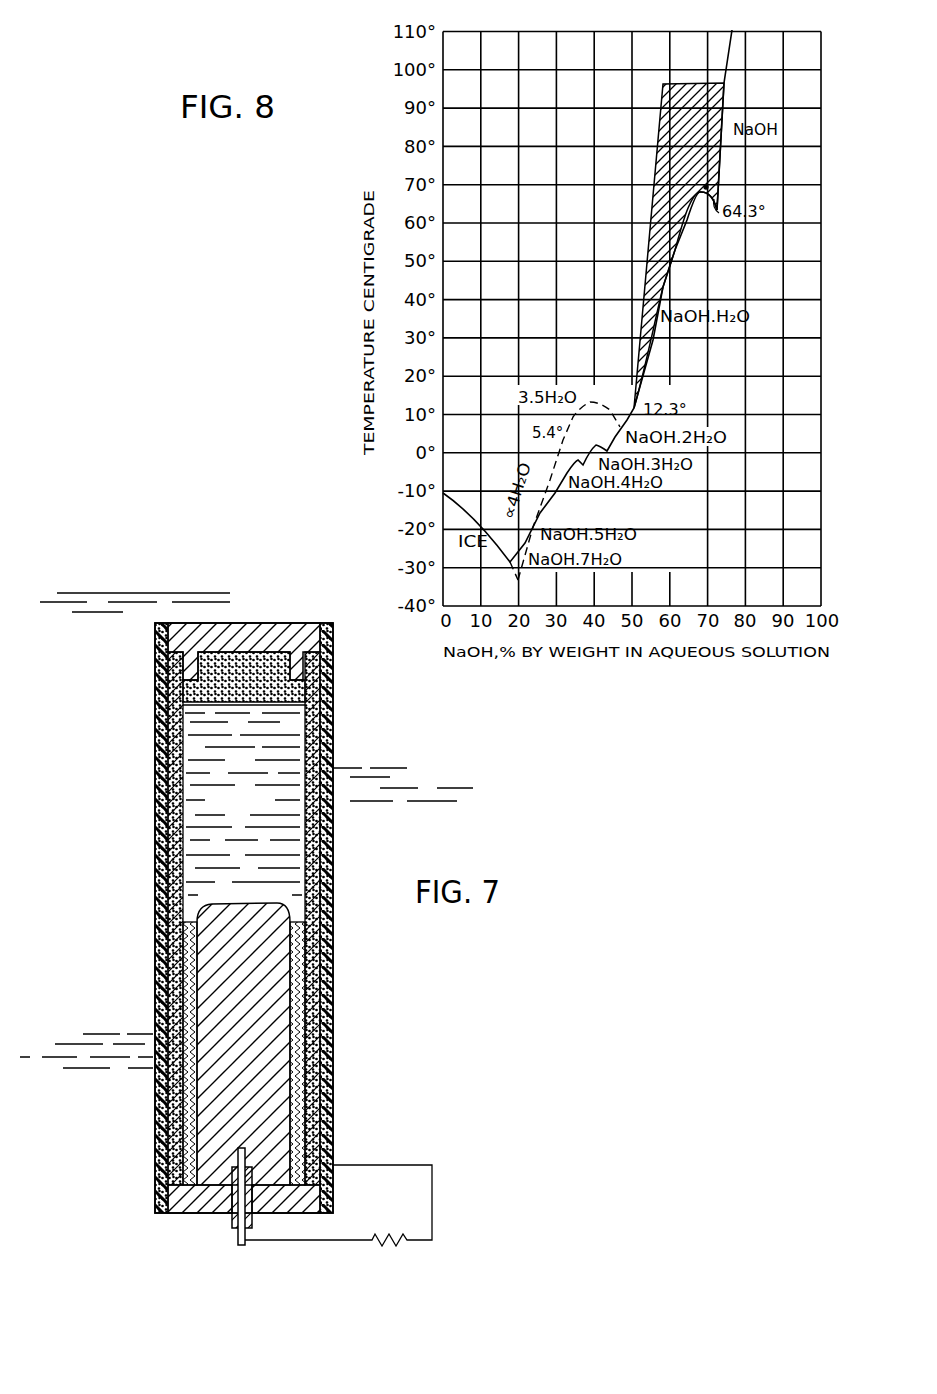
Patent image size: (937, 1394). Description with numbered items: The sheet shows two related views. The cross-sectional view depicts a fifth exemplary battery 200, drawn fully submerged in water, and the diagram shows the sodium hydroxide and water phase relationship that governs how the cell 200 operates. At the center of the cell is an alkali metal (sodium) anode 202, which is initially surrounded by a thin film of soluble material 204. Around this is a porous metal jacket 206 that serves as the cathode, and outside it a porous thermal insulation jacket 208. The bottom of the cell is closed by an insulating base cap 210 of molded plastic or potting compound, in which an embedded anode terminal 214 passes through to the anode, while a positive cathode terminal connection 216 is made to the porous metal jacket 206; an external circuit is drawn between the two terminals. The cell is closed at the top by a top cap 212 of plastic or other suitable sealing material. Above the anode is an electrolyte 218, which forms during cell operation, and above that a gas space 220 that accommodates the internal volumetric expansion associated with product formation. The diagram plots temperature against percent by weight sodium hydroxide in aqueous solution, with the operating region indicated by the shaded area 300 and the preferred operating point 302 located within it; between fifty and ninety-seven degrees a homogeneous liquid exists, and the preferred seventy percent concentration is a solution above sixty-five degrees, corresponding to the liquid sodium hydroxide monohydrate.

In FIG. 7, the battery 200 is at (131, 727).
In FIG. 7, the alkali metal anode 202 is at (263, 982).
In FIG. 7, the thin film of soluble material 204 is at (184, 991).
In FIG. 7, the porous metal jacket 206 is at (156, 858).
In FIG. 7, the porous thermal insulation jacket 208 is at (156, 1107).
In FIG. 7, the insulating base cap 210 is at (184, 1214).
In FIG. 7, the top cap 212 is at (278, 623).
In FIG. 7, the embedded anode terminal 214 is at (241, 1244).
In FIG. 7, the positive cathode terminal connection 216 is at (320, 1162).
In FIG. 7, the electrolyte 218 is at (262, 818).
In FIG. 7, the gas space 220 is at (268, 693).
In FIG. 8, the shaded area 300 is at (657, 133).
In FIG. 8, the preferred operating point 302 is at (702, 186).